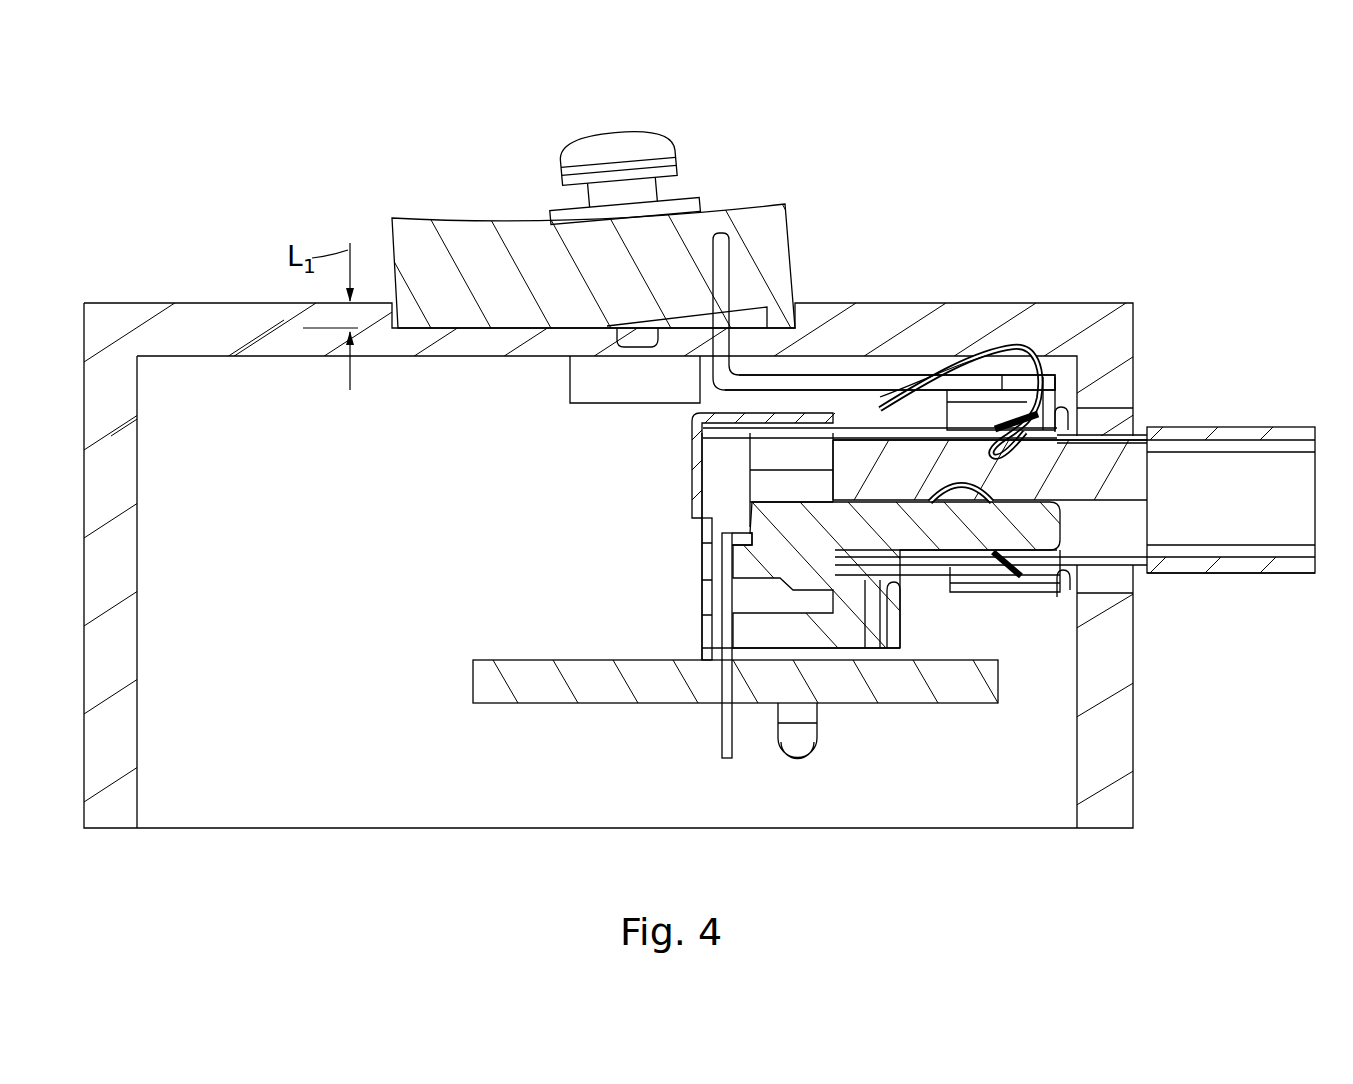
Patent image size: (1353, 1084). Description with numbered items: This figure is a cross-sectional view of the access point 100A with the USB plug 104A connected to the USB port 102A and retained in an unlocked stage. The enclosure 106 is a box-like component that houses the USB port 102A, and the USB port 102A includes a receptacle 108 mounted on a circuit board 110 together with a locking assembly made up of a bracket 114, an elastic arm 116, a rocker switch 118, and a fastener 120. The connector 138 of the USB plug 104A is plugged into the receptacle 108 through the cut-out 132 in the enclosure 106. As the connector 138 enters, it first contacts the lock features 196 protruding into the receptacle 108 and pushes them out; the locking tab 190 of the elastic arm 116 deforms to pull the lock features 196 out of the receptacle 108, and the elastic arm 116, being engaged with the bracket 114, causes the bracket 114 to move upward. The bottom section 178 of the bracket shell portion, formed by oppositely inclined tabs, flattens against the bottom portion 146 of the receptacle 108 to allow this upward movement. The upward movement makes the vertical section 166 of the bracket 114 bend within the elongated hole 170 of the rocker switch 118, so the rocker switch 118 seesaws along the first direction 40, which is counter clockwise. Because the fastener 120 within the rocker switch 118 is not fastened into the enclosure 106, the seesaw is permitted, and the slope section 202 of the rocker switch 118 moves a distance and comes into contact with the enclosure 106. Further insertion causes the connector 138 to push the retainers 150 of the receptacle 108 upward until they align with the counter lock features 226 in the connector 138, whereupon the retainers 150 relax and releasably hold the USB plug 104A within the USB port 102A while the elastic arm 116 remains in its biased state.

The first direction 40 is at (1092, 154).
The access point 100A is at (286, 204).
The USB port 102A is at (847, 370).
The USB plug 104A is at (1250, 580).
The enclosure 106 is at (1088, 300).
The receptacle 108 is at (903, 528).
The circuit board 110 is at (603, 678).
The bracket 114 is at (792, 370).
The elastic arm 116 is at (808, 414).
The rocker switch 118 is at (556, 250).
The fastener 120 is at (636, 143).
The cut-out 132 is at (1143, 480).
The connector 138 is at (1258, 440).
The bottom portion 146 is at (1062, 600).
The retainers 150 is at (1052, 437).
The vertical section 166 is at (713, 312).
The elongated hole 170 is at (720, 236).
The bottom section 178 is at (985, 580).
The locking tab 190 is at (935, 382).
The lock features 196 is at (1036, 352).
The slope section 202 is at (457, 253).
The counter lock features 226 is at (1043, 447).